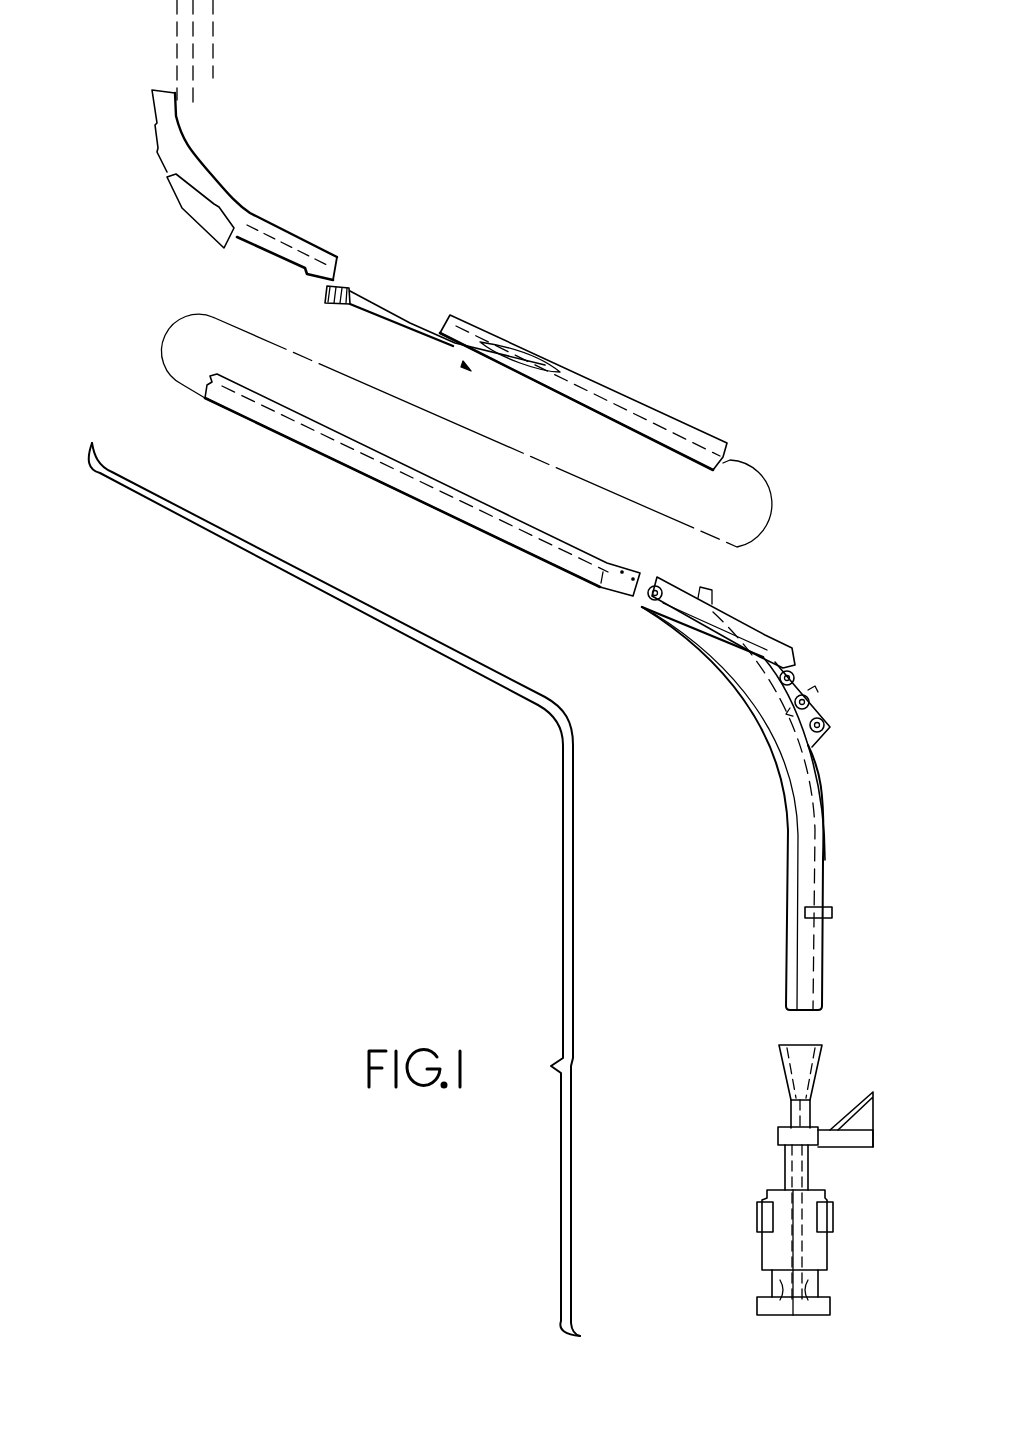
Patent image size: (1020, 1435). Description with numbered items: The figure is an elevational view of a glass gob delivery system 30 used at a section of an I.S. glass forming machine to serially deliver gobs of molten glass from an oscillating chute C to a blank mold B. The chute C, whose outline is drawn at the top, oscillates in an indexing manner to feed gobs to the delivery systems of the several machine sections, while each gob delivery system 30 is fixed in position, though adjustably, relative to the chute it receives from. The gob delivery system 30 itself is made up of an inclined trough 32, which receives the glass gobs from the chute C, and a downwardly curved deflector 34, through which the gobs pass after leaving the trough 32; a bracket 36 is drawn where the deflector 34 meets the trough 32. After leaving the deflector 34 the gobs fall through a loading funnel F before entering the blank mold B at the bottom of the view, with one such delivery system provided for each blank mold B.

The oscillating chute C is at (278, 222).
The gob delivery system 30 is at (733, 388).
The inclined trough 32 is at (593, 378).
The downwardly curved deflector 34 is at (823, 788).
The bracket 36 is at (705, 653).
The loading funnel F is at (822, 1067).
The blank mold B is at (818, 1255).